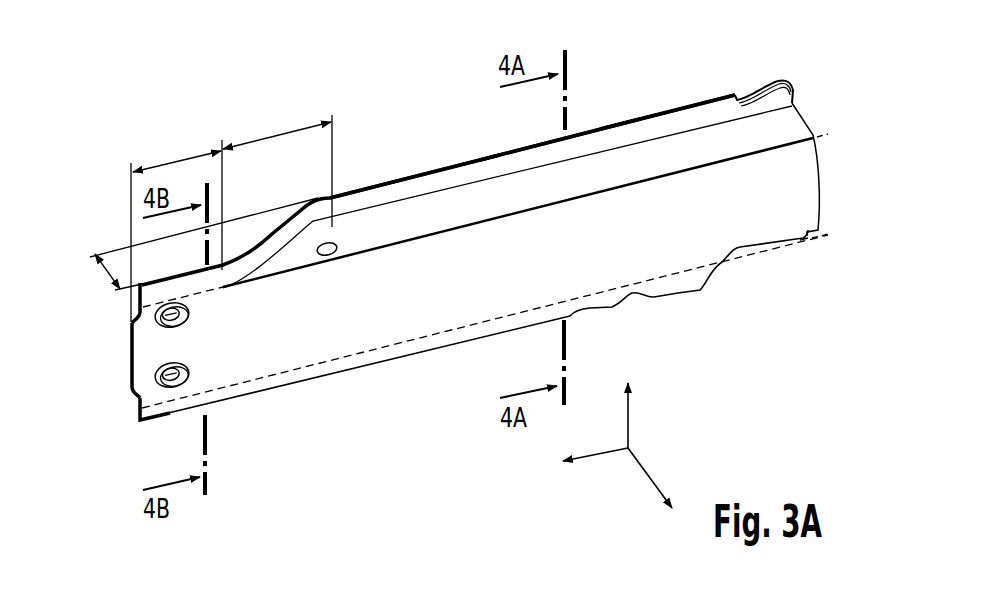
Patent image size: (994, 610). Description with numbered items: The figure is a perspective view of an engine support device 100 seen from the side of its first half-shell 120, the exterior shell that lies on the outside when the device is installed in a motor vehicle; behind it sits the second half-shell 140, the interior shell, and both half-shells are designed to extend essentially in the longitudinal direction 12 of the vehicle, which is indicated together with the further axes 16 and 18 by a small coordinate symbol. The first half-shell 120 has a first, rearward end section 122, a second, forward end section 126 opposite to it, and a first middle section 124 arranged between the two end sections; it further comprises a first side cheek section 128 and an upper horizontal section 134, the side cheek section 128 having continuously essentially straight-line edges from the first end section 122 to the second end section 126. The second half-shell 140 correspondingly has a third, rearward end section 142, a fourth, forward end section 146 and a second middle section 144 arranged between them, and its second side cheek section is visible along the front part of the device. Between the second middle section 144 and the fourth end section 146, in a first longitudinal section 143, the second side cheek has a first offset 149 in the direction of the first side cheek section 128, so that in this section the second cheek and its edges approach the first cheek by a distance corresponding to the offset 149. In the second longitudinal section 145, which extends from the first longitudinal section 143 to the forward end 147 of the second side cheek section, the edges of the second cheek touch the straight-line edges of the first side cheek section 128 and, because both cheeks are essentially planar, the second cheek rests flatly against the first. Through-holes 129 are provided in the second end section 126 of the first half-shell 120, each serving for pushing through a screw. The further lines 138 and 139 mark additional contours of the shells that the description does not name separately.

The engine support device 100 is at (222, 95).
The longitudinal direction 12 is at (603, 460).
The lateral direction (y) 16 is at (650, 474).
The vertical direction (z) 18 is at (631, 423).
The first half-shell 120 is at (338, 313).
The first end section 122 is at (804, 268).
The first middle section 124 is at (474, 353).
The second end section 126 is at (150, 435).
The first side cheek section 128 is at (395, 302).
The through-holes 129 is at (172, 329).
The upper horizontal section 134 is at (452, 205).
The upper channel 138 is at (633, 132).
The lower hidden edge 139 is at (273, 387).
The second half-shell 140 is at (398, 170).
The third end section 142 is at (760, 80).
The first longitudinal section 143 is at (275, 140).
The second middle section 144 is at (503, 145).
The second longitudinal section 145 is at (178, 160).
The fourth end section 146 is at (122, 232).
The forward end 147 is at (130, 360).
The first offset 149 is at (103, 270).